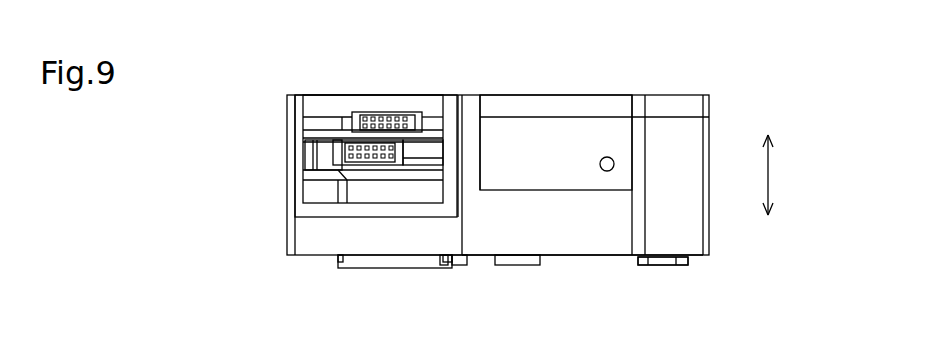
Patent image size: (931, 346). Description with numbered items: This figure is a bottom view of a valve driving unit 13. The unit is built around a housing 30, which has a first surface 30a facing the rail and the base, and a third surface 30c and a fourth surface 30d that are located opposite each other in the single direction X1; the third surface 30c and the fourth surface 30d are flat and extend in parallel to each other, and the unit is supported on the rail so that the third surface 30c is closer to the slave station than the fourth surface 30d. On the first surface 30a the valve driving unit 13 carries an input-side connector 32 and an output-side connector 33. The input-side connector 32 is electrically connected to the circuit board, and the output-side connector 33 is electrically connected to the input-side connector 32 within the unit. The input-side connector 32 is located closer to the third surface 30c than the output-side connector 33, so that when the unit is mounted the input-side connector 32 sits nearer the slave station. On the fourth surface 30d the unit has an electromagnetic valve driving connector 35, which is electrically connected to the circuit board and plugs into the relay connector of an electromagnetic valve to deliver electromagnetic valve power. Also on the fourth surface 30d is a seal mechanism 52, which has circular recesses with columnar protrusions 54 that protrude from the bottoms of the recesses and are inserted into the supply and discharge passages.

The valve driving unit 13 is at (313, 95).
The input-side connector 32 is at (387, 112).
The output-side connector 33 is at (357, 158).
The housing 30 is at (695, 95).
The first surface 30a is at (468, 105).
The third surface 30c is at (587, 94).
The fourth surface 30d is at (587, 258).
The electromagnetic valve driving connector 35 is at (388, 258).
The protrusions 54 is at (518, 267).
The seal mechanism 52 is at (698, 260).
The single direction X1 is at (770, 173).